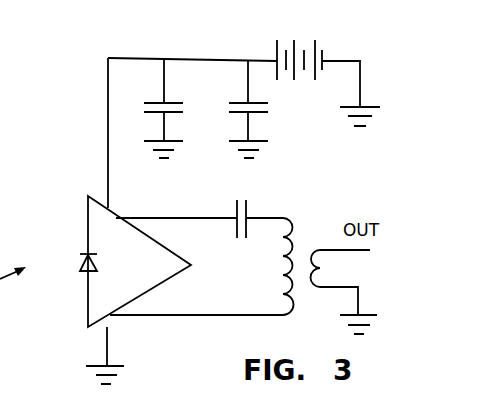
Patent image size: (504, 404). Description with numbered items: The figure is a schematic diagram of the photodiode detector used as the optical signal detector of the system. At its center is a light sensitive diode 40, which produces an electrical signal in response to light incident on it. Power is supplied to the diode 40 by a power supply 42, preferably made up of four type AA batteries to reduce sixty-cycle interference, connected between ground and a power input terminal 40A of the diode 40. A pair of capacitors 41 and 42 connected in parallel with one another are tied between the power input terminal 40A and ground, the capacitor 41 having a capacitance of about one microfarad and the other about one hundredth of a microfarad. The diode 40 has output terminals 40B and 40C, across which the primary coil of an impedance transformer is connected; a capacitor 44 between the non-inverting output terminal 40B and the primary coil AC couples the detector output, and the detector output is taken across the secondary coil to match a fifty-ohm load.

The light sensitive diode 40 is at (88, 292).
The power input terminal 40A is at (94, 178).
The output terminal 40B is at (148, 200).
The output terminal 40C is at (146, 329).
The capacitor 41 is at (173, 102).
The power supply 42 is at (257, 102).
The capacitor 44 is at (250, 214).